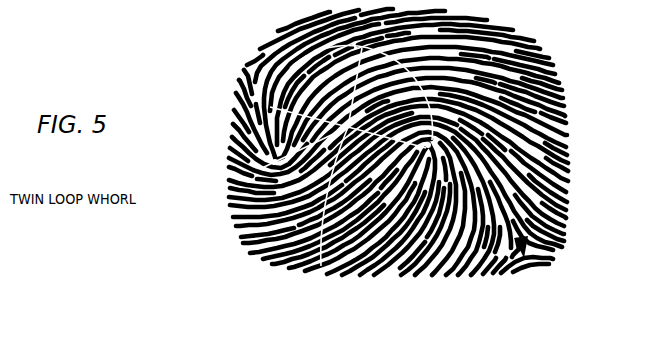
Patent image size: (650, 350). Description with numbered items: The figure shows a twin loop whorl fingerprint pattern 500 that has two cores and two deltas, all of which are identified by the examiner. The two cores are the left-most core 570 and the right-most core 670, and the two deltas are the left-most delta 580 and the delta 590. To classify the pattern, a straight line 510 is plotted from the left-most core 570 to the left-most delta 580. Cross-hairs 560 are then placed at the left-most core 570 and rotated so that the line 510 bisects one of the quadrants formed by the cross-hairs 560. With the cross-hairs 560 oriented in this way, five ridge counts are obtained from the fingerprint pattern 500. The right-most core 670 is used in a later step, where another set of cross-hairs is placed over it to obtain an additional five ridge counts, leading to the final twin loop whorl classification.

The twin loop whorl fingerprint pattern 500 is at (601, 57).
The straight line 510 is at (297, 160).
The cross-hairs 560 is at (288, 98).
The left-most core 570 is at (347, 125).
The left-most delta 580 is at (242, 162).
The delta 590 is at (522, 252).
The right-most core 670 is at (426, 148).